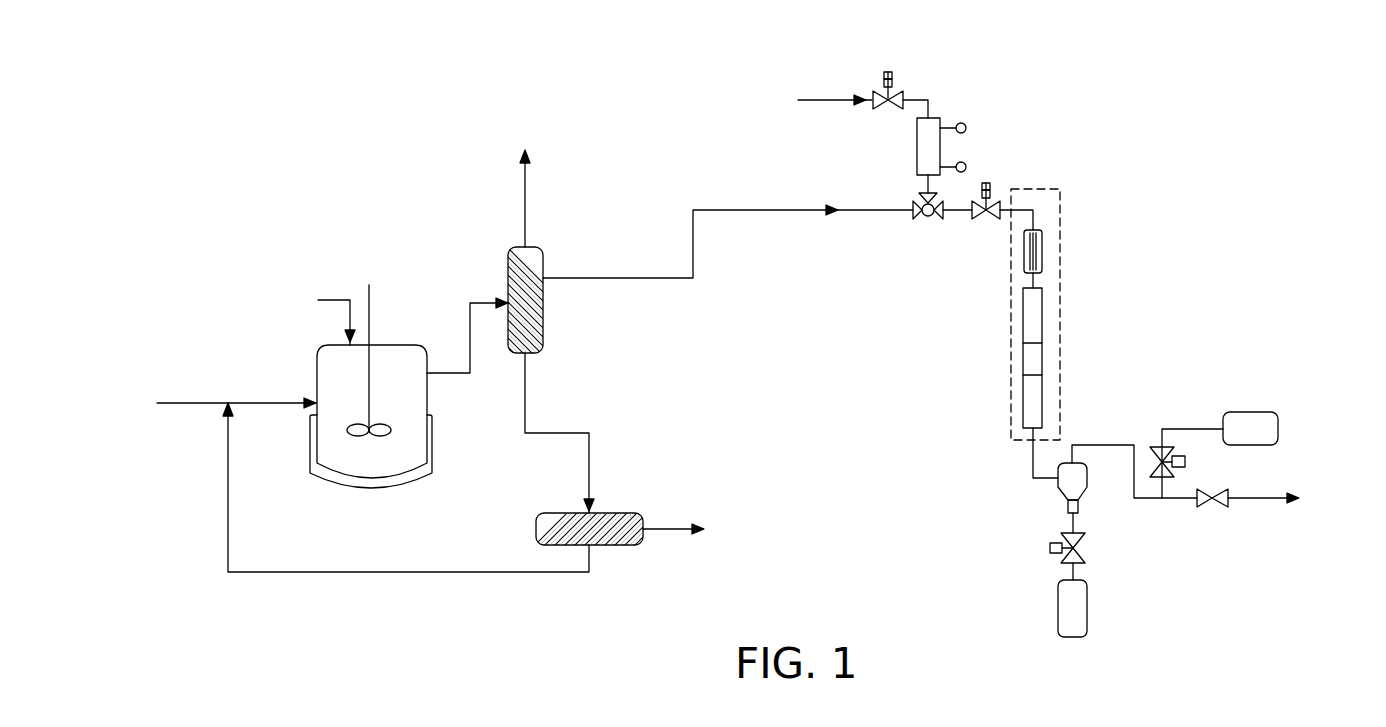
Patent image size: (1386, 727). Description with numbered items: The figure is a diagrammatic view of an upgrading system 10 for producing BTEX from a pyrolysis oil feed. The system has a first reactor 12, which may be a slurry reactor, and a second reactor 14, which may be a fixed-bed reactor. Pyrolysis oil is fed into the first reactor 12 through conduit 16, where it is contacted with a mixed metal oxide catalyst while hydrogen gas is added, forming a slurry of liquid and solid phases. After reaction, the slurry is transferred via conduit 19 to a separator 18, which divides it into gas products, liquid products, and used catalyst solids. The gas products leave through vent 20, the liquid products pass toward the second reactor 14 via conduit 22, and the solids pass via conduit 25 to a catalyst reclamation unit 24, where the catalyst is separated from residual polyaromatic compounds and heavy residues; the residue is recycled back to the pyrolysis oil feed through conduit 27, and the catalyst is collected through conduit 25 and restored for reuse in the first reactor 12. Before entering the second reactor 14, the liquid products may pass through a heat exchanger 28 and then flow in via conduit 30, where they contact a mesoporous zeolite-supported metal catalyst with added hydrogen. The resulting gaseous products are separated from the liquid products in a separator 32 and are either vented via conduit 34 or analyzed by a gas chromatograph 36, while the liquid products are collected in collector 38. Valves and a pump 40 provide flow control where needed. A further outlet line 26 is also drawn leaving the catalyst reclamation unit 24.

The upgrading system 10 is at (1223, 128).
The first reactor 12 is at (317, 375).
The second reactor 14 is at (1042, 322).
The conduit 16 is at (193, 403).
The separator 18 is at (508, 270).
The conduit 19 is at (470, 318).
The vent 20 is at (525, 200).
The conduit 22 is at (693, 248).
The catalyst reclamation unit 24 is at (613, 513).
The conduit 25 is at (525, 398).
The product outlet line 26 is at (668, 529).
The conduit 27 is at (405, 572).
The heat exchanger 28 is at (1042, 252).
The conduit 30 is at (1033, 208).
The separator 32 is at (1058, 485).
The conduit 34 is at (1253, 500).
The gas chromatograph 36 is at (1280, 428).
The collector 38 is at (1088, 608).
The pump 40 is at (917, 143).